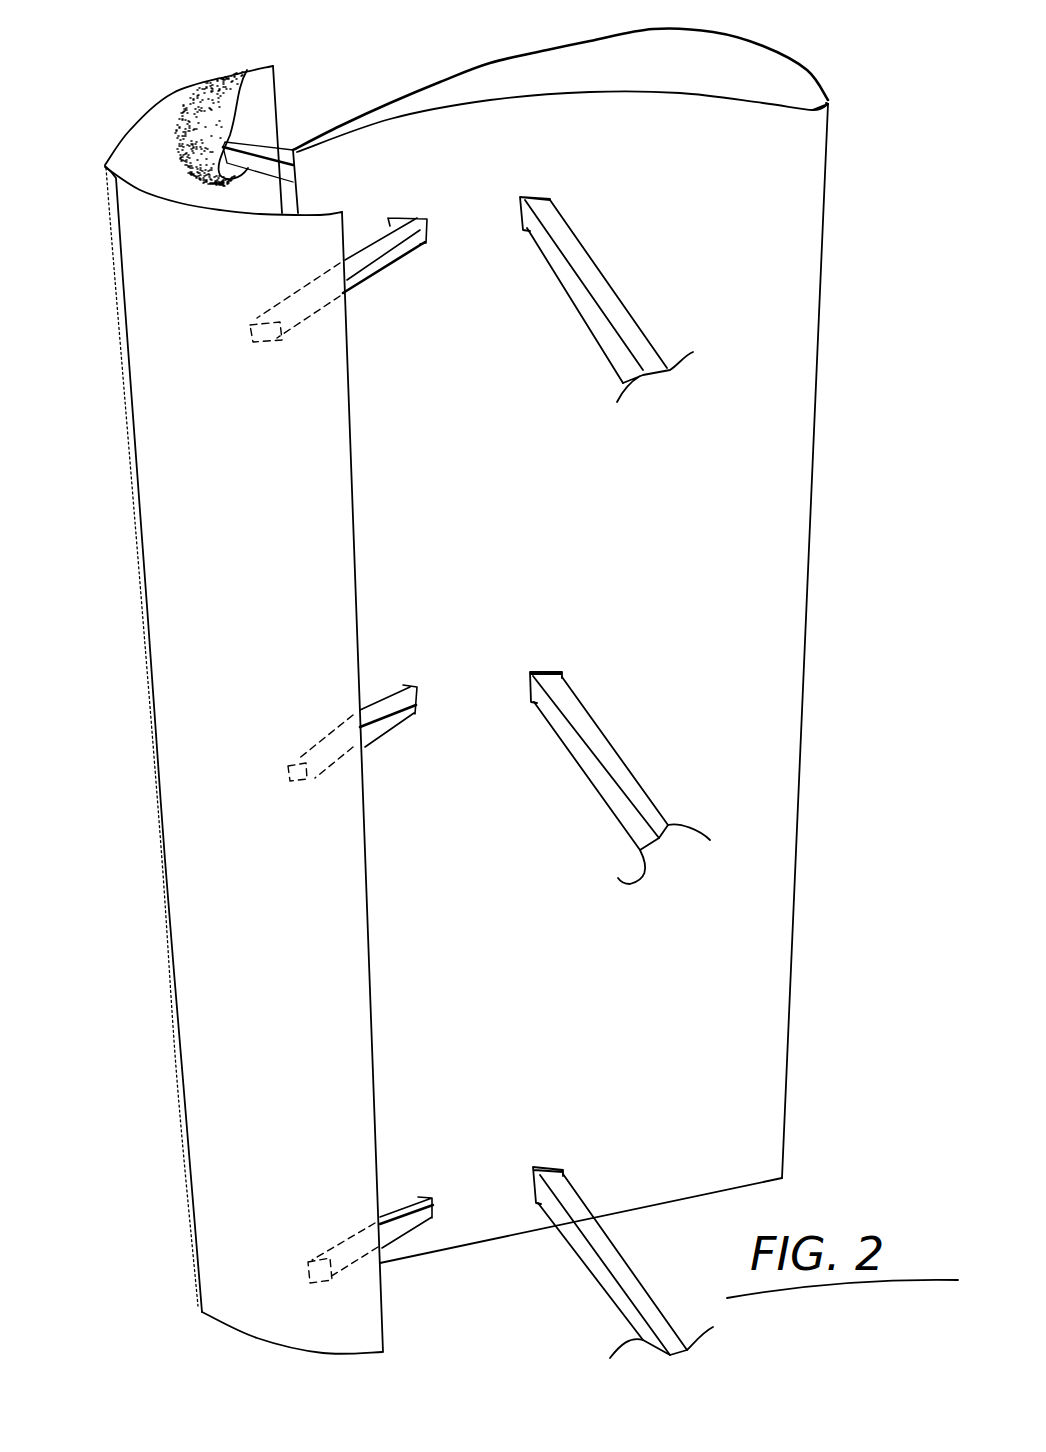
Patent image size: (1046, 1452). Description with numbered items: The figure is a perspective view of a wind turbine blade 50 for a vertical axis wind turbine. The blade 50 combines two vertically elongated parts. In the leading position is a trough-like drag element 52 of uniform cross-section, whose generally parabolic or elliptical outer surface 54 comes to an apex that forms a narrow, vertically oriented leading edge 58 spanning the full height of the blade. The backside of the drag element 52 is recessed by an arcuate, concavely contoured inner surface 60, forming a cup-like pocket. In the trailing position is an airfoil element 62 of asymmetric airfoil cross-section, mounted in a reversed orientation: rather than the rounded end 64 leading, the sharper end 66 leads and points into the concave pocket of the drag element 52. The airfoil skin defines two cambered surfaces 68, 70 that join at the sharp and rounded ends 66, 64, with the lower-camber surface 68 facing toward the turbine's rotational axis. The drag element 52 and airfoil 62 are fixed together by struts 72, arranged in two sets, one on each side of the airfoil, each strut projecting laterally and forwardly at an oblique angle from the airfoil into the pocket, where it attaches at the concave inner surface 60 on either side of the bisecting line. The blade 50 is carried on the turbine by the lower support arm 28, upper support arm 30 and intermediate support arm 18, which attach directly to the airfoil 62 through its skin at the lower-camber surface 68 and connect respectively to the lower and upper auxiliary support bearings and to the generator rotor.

The intermediate support arm 18 is at (603, 750).
The lower support arm 28 is at (627, 1277).
The upper support arm 30 is at (603, 285).
The wind turbine blade 50 is at (916, 1066).
The drag element 52 is at (129, 781).
The outer surface 54 is at (237, 1105).
The leading edge 58 is at (140, 677).
The inner surface 60 is at (275, 103).
The airfoil element 62 is at (781, 738).
The rounded end 64 is at (833, 100).
The sharper end 66 is at (292, 148).
The lower-camber surface 68 is at (786, 442).
The cambered surface 70 is at (472, 68).
The struts 72 is at (240, 74).